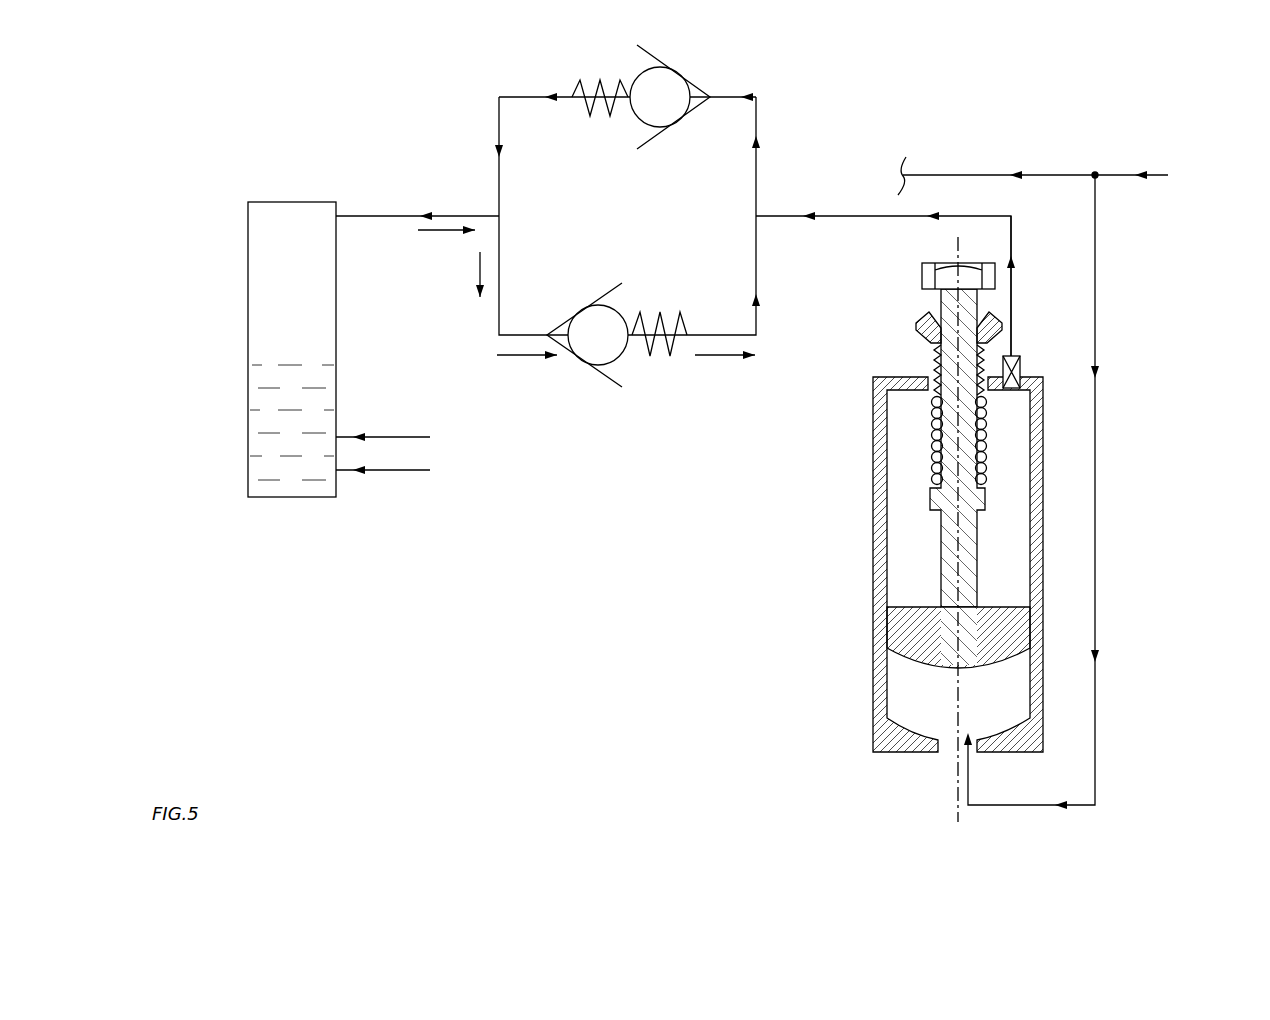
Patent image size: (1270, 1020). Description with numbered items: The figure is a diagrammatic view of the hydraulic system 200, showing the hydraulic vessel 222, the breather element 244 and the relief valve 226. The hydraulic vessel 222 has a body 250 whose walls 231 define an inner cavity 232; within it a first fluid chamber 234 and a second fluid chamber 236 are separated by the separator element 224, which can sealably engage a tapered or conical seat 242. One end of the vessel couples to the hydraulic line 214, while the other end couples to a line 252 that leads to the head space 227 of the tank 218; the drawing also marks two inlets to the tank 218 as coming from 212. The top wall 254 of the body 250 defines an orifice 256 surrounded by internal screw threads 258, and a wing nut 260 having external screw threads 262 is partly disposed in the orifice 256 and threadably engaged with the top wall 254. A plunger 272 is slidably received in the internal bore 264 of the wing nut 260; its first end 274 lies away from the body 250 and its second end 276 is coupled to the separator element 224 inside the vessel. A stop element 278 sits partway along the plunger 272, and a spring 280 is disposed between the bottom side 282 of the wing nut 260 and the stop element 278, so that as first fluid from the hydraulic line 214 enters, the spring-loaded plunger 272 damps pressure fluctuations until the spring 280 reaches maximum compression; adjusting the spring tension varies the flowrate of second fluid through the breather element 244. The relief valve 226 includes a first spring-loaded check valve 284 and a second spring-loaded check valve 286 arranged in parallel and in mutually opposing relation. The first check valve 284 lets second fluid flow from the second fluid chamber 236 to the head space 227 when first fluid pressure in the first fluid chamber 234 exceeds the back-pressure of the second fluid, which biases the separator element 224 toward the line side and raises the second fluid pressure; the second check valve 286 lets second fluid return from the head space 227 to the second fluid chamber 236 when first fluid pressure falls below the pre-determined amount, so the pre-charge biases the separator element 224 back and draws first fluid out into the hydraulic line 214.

The hydraulic system 200 is at (1183, 108).
The pump source 212 is at (408, 442).
The hydraulic line 214 is at (945, 172).
The tank 218 is at (303, 378).
The hydraulic vessel 222 is at (843, 520).
The separator element 224 is at (910, 635).
The relief valve 226 is at (450, 103).
The head space 227 is at (310, 286).
The walls 231 is at (1038, 432).
The inner cavity 232 is at (1010, 412).
The first fluid chamber 234 is at (938, 701).
The second fluid chamber 236 is at (1020, 541).
The seat 242 is at (910, 720).
The breather element 244 is at (1018, 368).
The body 250 is at (1045, 472).
The line 252 is at (362, 210).
The top wall 254 is at (1013, 345).
The orifice 256 is at (982, 402).
The internal screw threads 258 is at (932, 373).
The wing nut 260 is at (1002, 312).
The external screw threads 262 is at (915, 333).
The internal bore 264 is at (928, 350).
The plunger 272 is at (957, 448).
The first end 274 is at (935, 312).
The second end 276 is at (978, 602).
The stop element 278 is at (937, 501).
The spring 280 is at (981, 448).
The bottom side 282 is at (935, 393).
The first spring-loaded check valve 284 is at (662, 95).
The second spring-loaded check valve 286 is at (596, 353).